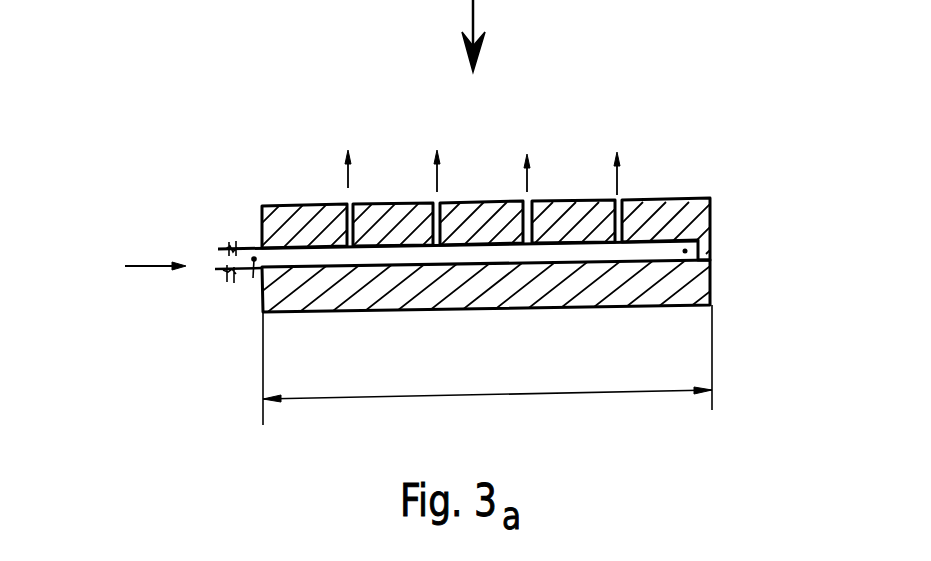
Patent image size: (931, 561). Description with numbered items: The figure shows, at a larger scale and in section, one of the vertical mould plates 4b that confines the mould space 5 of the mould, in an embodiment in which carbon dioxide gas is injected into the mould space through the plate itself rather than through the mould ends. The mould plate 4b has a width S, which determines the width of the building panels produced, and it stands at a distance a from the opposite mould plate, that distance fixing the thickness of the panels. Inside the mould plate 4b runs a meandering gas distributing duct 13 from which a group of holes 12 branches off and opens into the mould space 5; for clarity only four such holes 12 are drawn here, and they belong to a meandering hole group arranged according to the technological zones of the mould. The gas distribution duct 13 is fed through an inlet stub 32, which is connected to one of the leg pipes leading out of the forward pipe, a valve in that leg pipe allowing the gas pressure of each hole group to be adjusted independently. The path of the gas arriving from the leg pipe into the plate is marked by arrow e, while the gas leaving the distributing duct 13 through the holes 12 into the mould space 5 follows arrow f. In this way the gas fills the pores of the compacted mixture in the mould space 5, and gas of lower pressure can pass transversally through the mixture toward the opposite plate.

The mould space 5 is at (460, 291).
The holes 12 is at (345, 210).
The gas distributing duct 13 is at (686, 250).
The inlet stub 32 is at (253, 278).
The mould plate 4b is at (257, 326).
The distance between mould plates a is at (218, 250).
The arrow e is at (141, 266).
The arrow f is at (347, 162).
The width of mould plate S is at (420, 392).